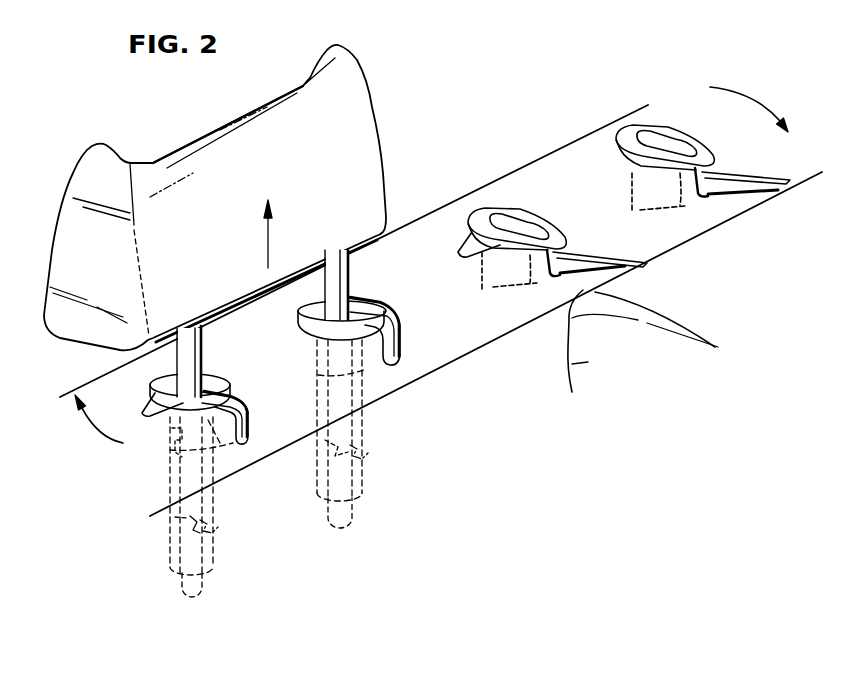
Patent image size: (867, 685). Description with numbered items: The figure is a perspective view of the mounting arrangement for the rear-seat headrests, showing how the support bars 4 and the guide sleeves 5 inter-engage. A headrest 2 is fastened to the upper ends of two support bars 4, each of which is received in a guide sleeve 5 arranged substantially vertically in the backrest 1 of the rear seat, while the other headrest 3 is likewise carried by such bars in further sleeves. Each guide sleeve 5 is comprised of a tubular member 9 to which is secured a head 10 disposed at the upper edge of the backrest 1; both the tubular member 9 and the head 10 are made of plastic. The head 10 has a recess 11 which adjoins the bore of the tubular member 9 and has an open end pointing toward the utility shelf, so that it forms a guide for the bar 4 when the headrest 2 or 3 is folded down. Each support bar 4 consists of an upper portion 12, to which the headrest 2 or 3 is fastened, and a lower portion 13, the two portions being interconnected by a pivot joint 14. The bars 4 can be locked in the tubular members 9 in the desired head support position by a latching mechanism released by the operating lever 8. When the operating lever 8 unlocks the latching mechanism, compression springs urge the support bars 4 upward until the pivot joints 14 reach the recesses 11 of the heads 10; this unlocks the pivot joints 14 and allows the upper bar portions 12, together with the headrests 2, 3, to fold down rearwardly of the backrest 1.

The backrest 1 is at (488, 193).
The headrest 2 is at (357, 133).
The headrest 3 is at (572, 367).
The support bar 4 is at (358, 293).
The guide sleeve 5 is at (174, 488).
The operating lever 8 is at (145, 413).
The tubular member 9 is at (172, 518).
The head 10 is at (160, 383).
The recess 11 is at (245, 443).
The upper portion 12 is at (193, 355).
The lower portion 13 is at (182, 590).
The pivot joint 14 is at (207, 523).